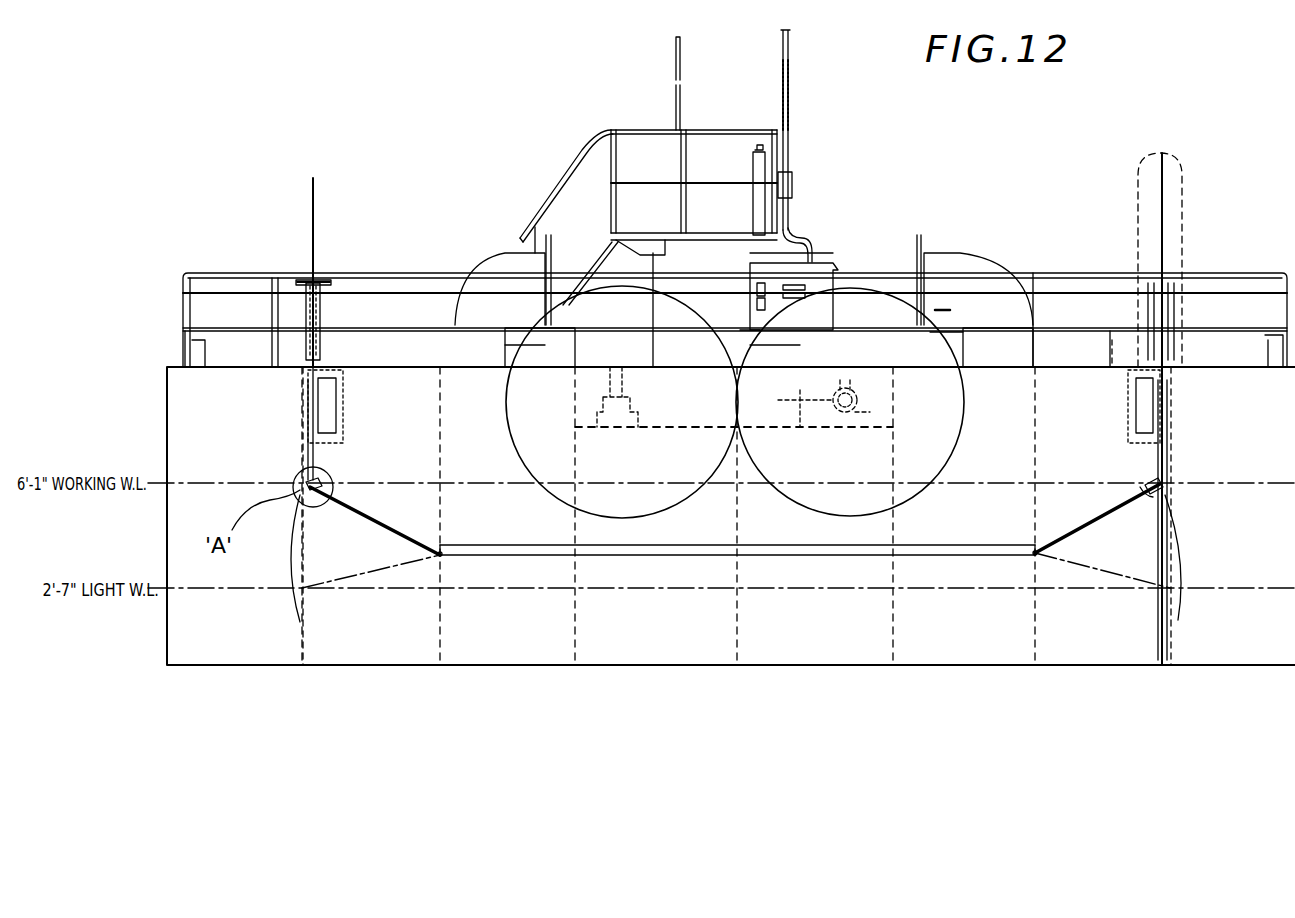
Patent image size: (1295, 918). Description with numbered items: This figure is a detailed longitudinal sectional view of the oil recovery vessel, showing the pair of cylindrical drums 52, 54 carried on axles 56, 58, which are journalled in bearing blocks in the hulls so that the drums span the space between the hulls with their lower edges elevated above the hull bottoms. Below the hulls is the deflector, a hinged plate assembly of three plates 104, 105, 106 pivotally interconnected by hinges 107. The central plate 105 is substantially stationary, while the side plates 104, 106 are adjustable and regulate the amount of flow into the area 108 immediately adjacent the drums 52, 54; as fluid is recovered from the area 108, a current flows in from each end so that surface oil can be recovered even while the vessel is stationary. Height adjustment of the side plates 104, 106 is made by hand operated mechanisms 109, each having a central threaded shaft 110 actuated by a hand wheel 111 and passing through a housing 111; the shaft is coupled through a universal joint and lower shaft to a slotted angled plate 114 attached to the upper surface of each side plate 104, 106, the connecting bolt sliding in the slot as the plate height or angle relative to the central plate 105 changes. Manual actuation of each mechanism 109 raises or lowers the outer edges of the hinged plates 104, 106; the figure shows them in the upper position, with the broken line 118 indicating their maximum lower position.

The cylindrical drum 52 is at (855, 338).
The cylindrical drum 54 is at (626, 338).
The axle 56 is at (858, 402).
The axle 58 is at (622, 402).
The adjustable side plate 104 is at (355, 518).
The stationary plate 105 is at (812, 556).
The adjustable side plate 106 is at (1100, 520).
The hinge 107 is at (445, 558).
The area adjacent the drums 108 is at (738, 524).
The hand operated mechanism 109 is at (313, 300).
The threaded shaft 110 is at (315, 215).
The hand wheel 111 is at (330, 272).
The slotted angled plate 114 is at (1165, 480).
The broken line 118 is at (390, 566).